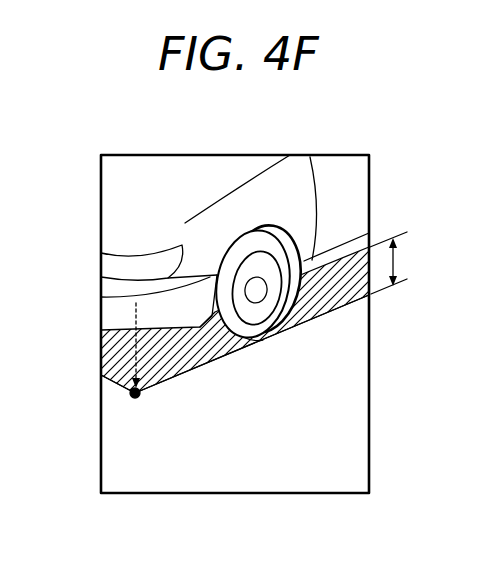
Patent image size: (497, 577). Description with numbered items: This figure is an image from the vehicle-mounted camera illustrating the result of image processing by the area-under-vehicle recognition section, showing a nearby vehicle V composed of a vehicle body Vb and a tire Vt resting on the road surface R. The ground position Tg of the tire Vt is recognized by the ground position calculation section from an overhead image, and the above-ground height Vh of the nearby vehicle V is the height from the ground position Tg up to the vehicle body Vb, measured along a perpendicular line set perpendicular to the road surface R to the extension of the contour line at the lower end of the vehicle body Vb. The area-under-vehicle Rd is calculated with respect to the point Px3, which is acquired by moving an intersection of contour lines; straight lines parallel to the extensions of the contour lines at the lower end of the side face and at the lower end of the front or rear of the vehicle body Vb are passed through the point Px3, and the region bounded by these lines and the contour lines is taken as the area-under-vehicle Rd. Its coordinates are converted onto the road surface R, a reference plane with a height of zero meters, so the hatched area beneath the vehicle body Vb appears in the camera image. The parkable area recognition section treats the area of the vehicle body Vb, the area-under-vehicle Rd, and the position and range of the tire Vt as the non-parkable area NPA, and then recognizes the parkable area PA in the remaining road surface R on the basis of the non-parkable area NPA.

The nearby vehicle V is at (184, 224).
The vehicle body Vb is at (172, 178).
The tire Vt is at (278, 252).
The non-parkable area NPA is at (356, 202).
The above-ground height Vh is at (403, 263).
The area-under-vehicle Rd is at (327, 295).
The road surface R is at (358, 380).
The ground position Tg is at (258, 342).
The point Px3 is at (135, 393).
The parkable area PA is at (225, 449).